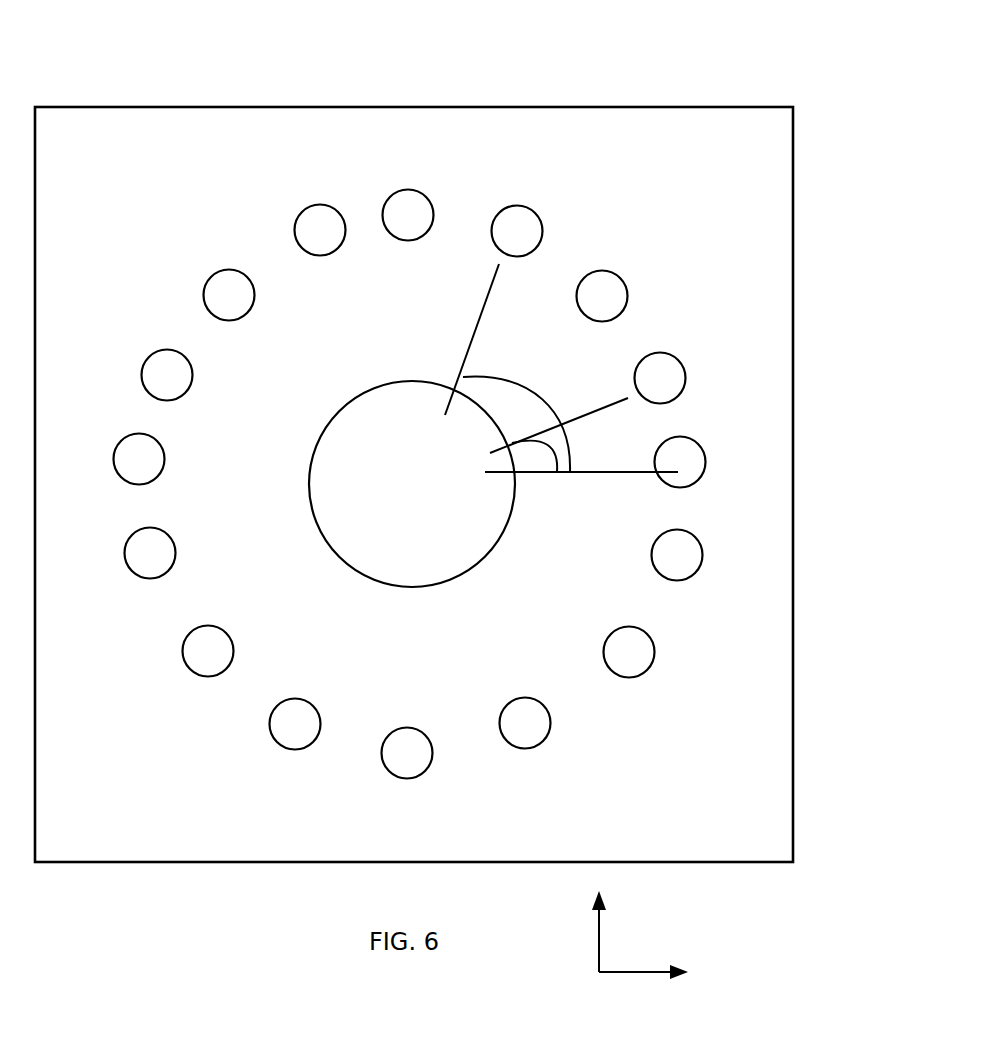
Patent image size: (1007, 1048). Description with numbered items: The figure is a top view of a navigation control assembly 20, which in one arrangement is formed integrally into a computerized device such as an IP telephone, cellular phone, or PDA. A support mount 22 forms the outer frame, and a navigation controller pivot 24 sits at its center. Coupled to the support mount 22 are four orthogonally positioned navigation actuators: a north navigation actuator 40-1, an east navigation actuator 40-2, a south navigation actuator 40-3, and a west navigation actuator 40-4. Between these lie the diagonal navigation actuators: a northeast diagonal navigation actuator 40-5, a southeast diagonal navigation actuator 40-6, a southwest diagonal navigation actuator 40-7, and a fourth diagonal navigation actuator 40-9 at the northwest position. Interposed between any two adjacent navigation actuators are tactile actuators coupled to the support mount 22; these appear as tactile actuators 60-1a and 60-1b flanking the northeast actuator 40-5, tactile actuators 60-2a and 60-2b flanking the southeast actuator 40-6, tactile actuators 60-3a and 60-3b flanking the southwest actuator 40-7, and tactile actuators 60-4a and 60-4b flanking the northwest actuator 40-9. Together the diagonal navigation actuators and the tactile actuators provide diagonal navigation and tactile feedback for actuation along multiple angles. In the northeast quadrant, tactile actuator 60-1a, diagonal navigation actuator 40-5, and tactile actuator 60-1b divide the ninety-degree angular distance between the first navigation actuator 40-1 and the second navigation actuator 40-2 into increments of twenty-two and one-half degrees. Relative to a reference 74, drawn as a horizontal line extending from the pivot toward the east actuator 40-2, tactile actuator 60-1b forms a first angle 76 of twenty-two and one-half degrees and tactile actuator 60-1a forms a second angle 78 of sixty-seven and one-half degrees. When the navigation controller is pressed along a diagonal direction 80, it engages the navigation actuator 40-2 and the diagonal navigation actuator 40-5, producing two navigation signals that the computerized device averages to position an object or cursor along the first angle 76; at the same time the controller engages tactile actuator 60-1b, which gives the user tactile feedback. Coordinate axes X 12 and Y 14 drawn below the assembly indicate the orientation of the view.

The navigation control assembly 20 is at (530, 67).
The support mount 22 is at (645, 107).
The navigation controller pivot 24 is at (412, 484).
The X axis 12 is at (620, 973).
The Y axis 14 is at (598, 942).
The navigation actuator (north) 40-1 is at (405, 189).
The navigation actuator (east) 40-2 is at (706, 457).
The navigation actuator (south) 40-3 is at (414, 777).
The navigation actuator (west) 40-4 is at (116, 450).
The diagonal navigation actuator (northeast) 40-5 is at (604, 271).
The diagonal navigation actuator (southeast) 40-6 is at (638, 674).
The diagonal navigation actuator (southwest) 40-7 is at (192, 672).
The northwest loudspeaker 40-9 is at (215, 270).
The tactile actuator 60-1a is at (517, 206).
The tactile actuator 60-1b is at (657, 353).
The tactile actuator 60-2a is at (700, 540).
The virtual sound source 60-2b is at (536, 746).
The virtual sound source 60-3a is at (286, 748).
The virtual sound source 60-3b is at (132, 568).
The virtual sound source 60-4a is at (148, 358).
The virtual sound source 60-4b is at (320, 206).
The reference 74 is at (588, 473).
The first angle 76 is at (568, 463).
The second angle 78 is at (541, 385).
The diagonal direction 80 is at (589, 410).